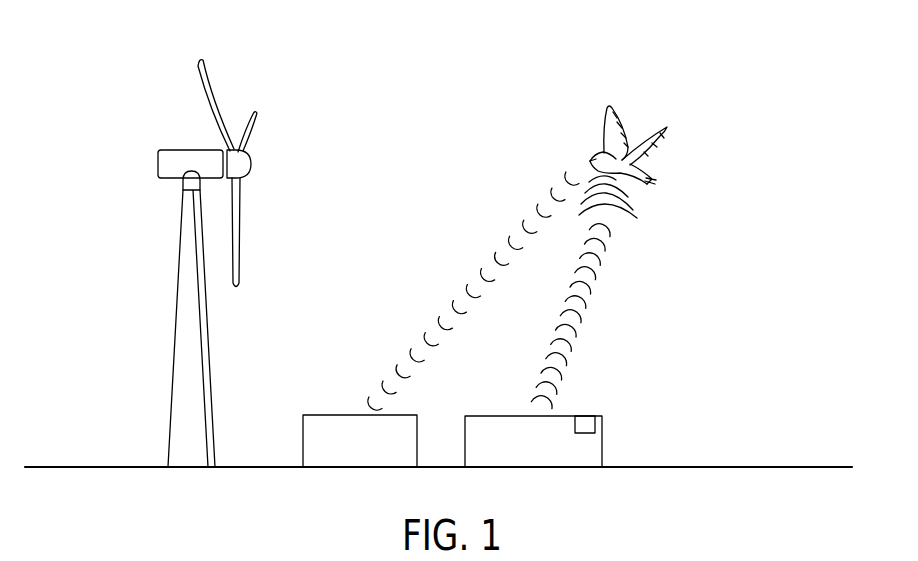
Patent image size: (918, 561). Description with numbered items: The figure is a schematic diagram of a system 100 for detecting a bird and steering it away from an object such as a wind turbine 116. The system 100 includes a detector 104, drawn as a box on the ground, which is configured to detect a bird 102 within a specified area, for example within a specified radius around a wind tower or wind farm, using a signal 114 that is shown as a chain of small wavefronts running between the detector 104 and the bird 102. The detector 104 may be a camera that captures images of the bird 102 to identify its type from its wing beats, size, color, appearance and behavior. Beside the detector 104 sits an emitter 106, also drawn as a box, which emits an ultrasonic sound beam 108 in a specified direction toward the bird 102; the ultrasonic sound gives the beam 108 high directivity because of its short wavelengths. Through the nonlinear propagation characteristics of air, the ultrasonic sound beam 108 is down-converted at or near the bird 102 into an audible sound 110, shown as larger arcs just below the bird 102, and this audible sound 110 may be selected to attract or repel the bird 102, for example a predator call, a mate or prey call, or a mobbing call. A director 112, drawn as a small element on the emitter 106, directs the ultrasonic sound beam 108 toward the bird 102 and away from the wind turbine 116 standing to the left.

The system 100 is at (702, 73).
The bird 102 is at (605, 157).
The detector 104 is at (322, 414).
The emitter 106 is at (502, 416).
The ultrasonic sound beam 108 is at (585, 303).
The audible sound 110 is at (627, 217).
The director 112 is at (583, 418).
The signal 114 is at (455, 293).
The wind turbine 116 is at (163, 168).